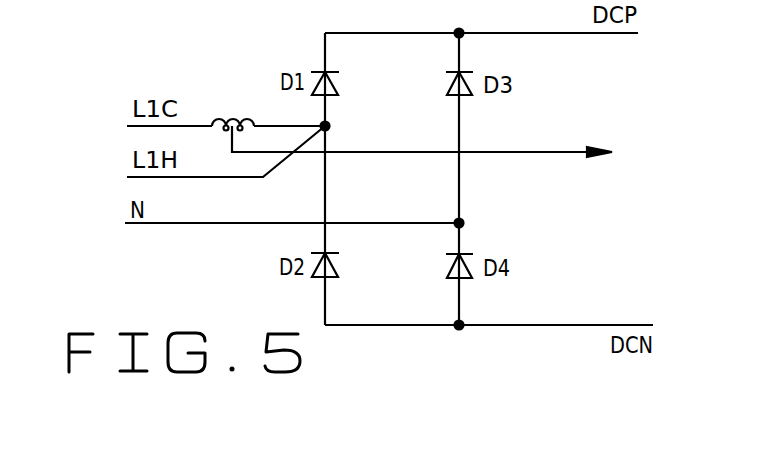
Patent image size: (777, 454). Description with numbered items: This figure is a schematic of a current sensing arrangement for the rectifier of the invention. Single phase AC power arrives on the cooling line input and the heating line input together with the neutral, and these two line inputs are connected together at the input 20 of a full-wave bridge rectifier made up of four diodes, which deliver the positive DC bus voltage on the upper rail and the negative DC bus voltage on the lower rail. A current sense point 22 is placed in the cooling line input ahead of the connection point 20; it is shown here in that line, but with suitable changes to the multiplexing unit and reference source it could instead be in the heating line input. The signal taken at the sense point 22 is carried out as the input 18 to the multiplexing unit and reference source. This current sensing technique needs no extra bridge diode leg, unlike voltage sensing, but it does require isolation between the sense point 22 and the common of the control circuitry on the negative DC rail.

The input to multiplexing unit and reference source 18 is at (468, 138).
The input of the rectifier bridge 20 is at (345, 127).
The current sense point 22 is at (261, 139).